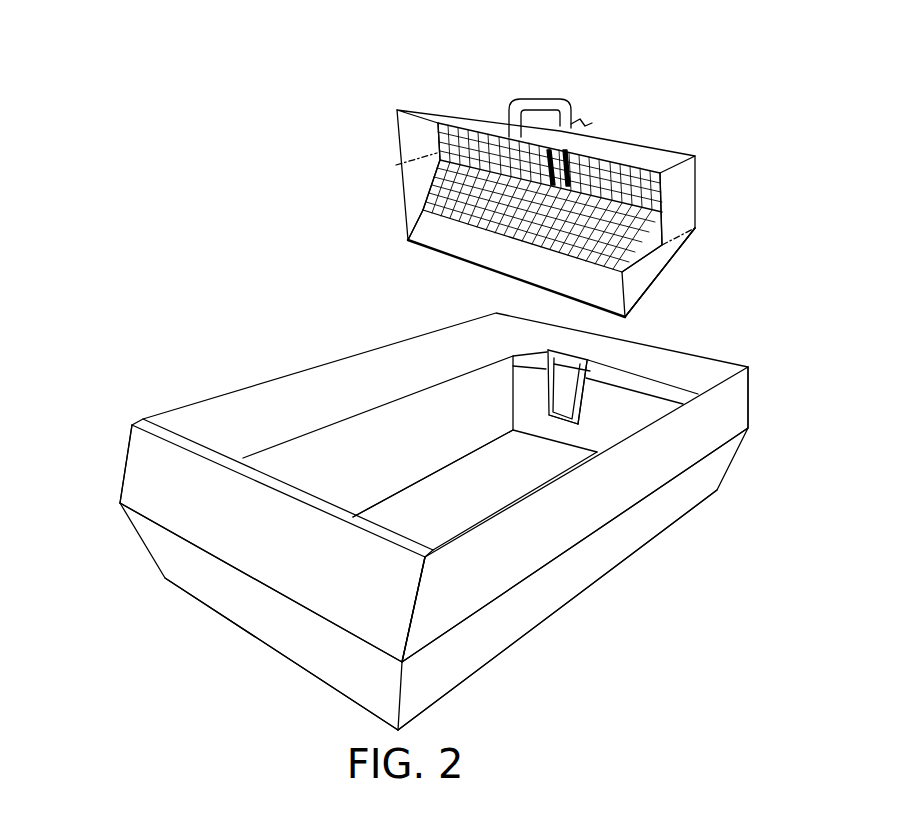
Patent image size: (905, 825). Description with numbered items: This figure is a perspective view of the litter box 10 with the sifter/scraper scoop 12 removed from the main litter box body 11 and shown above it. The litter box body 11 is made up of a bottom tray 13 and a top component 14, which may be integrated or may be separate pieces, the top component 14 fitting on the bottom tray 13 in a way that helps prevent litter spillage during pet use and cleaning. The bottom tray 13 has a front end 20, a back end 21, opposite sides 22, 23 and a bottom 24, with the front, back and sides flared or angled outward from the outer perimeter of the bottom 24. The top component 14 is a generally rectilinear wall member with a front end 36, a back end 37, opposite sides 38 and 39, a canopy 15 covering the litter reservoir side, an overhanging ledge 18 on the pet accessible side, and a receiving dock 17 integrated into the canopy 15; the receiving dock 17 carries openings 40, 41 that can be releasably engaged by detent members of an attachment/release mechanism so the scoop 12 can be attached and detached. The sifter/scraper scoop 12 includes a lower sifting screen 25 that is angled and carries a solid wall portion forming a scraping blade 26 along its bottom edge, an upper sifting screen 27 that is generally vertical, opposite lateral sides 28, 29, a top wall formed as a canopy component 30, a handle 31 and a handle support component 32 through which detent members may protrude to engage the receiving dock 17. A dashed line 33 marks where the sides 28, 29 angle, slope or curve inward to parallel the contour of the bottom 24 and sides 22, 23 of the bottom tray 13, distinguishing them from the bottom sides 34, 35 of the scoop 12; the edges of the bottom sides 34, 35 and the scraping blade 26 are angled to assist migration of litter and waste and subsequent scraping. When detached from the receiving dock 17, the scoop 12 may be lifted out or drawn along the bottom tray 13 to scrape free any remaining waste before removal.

The litter box 10 is at (229, 175).
The main litter box body 11 is at (758, 418).
The sifter/scraper scoop 12 is at (411, 96).
The bottom tray 13 is at (118, 526).
The top component 14 is at (119, 459).
The canopy 15 is at (718, 370).
The receiving dock 17 is at (548, 418).
The overhanging ledge 18 is at (140, 416).
The front end 20 is at (246, 625).
The back end 21 is at (596, 421).
The side 22 is at (318, 479).
The side 23 is at (532, 616).
The bottom 24 is at (416, 524).
The lower sifting screen 25 is at (536, 168).
The scraping blade 26 is at (528, 273).
The upper sifting screen 27 is at (471, 141).
The lateral side 28 is at (408, 138).
The lateral side 29 is at (700, 192).
The canopy component 30 is at (664, 154).
The handle 31 is at (547, 97).
The handle support component 32 is at (592, 123).
The dashed line 33 is at (700, 228).
The bottom side 34 is at (408, 181).
The bottom side 35 is at (672, 264).
The front end 36 is at (259, 543).
The back end 37 is at (513, 370).
The side 38 is at (217, 412).
The side 39 is at (468, 577).
The opening 40 is at (551, 360).
The opening 41 is at (582, 366).